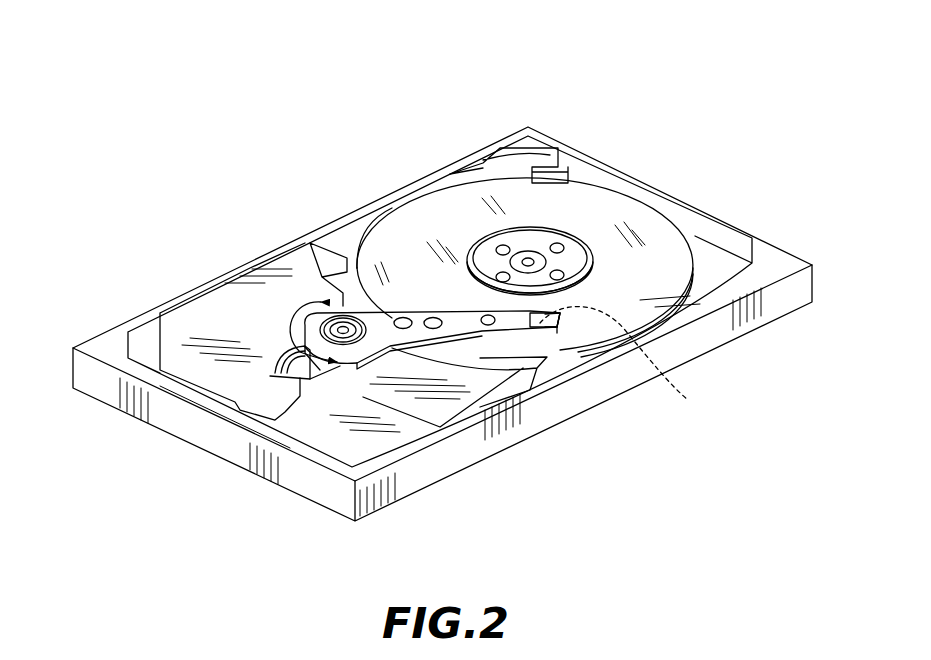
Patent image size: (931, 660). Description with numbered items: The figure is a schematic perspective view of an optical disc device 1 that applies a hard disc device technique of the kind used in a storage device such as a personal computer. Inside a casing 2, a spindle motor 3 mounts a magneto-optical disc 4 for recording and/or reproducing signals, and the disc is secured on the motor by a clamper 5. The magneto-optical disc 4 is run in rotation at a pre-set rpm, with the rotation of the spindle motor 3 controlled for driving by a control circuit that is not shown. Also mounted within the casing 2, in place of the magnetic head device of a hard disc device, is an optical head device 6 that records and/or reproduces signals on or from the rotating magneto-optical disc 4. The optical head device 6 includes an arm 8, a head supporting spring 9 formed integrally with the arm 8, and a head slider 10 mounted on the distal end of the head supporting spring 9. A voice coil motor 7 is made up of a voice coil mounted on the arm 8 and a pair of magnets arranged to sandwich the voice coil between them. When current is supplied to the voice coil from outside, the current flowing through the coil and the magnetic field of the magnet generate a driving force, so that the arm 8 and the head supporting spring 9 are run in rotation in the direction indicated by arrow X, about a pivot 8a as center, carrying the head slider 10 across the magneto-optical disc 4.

The optical disc device 1 is at (585, 135).
The casing 2 is at (700, 337).
The spindle motor 3 is at (681, 393).
The magneto-optical disc 4 is at (630, 222).
The clamper 5 is at (488, 252).
The optical head device 6 is at (420, 287).
The voice coil motor 7 is at (223, 326).
The arm 8 is at (388, 312).
The pivot 8a is at (343, 328).
The head supporting spring 9 is at (545, 316).
The head slider 10 is at (575, 316).